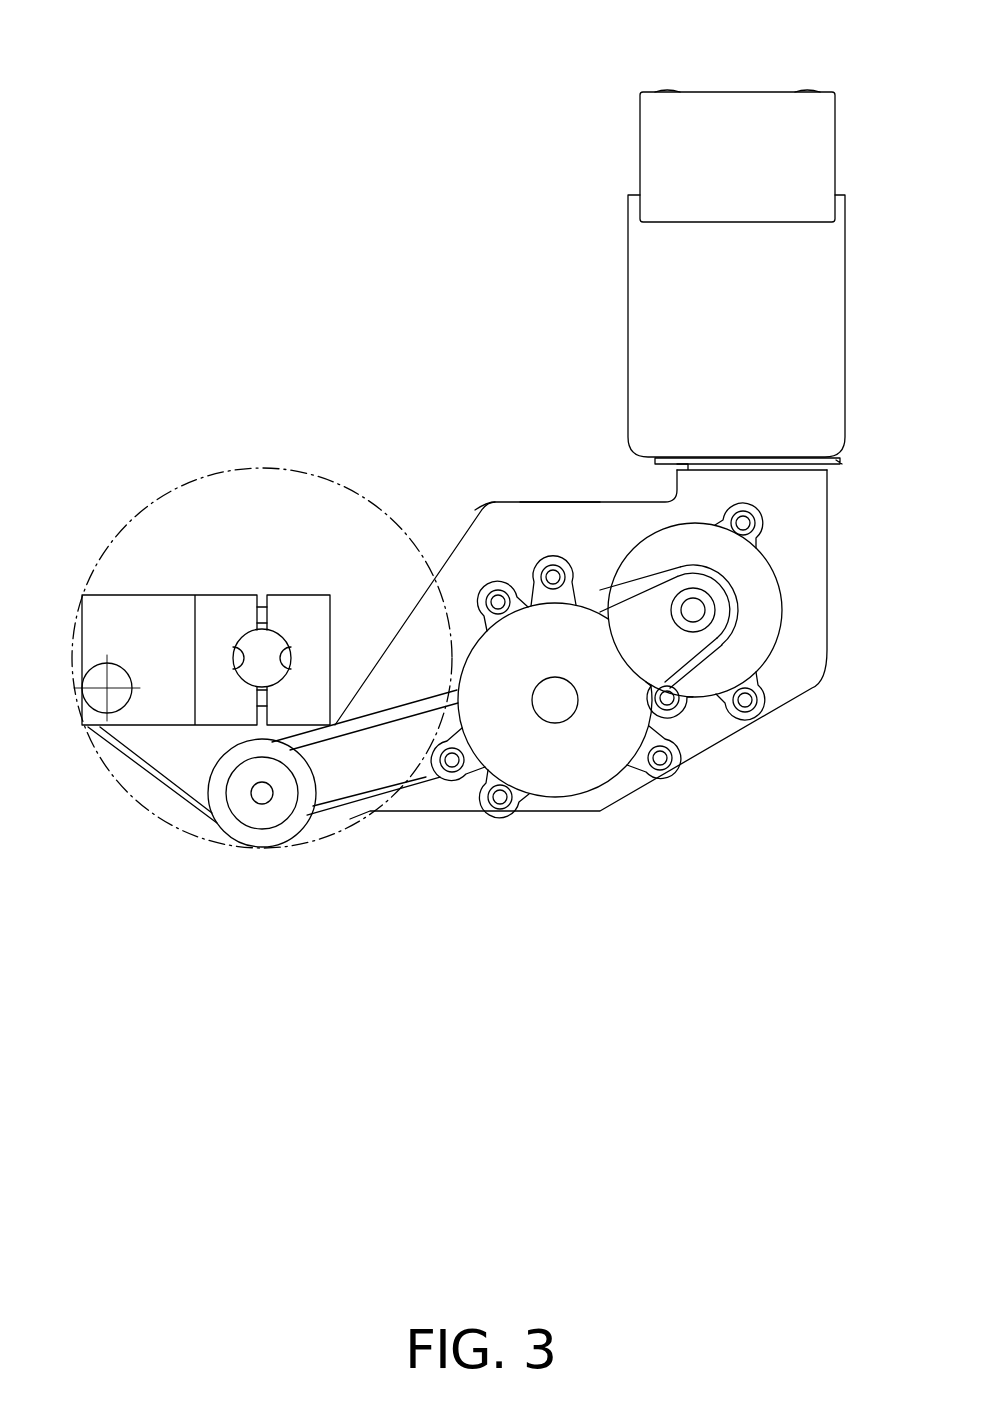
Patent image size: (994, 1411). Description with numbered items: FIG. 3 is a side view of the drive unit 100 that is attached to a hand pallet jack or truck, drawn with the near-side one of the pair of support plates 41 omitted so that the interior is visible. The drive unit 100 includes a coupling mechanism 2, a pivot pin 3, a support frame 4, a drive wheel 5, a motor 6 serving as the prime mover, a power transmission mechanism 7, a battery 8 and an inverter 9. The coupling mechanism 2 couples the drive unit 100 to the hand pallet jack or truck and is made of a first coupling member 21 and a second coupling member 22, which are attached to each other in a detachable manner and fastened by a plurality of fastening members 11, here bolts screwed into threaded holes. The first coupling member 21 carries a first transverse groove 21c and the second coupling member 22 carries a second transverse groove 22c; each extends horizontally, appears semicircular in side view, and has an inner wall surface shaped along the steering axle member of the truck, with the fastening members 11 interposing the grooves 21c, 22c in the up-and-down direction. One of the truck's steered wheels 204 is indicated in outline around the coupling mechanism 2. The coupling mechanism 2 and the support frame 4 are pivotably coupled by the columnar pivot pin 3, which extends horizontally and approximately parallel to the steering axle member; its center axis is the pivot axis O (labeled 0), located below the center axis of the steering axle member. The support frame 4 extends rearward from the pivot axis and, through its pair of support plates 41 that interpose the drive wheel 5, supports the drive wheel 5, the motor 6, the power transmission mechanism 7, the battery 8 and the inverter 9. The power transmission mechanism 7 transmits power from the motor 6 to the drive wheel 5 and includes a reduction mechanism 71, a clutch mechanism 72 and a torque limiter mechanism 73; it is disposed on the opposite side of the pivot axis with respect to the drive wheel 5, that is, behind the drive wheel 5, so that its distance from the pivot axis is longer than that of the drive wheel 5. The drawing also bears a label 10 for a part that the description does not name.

The drive unit 100 is at (418, 327).
The battery 8 is at (763, 90).
The inverter 9 is at (628, 288).
The support frame 4 is at (549, 603).
The housing corner portion 10 is at (478, 508).
The support plates 41 is at (556, 508).
The steered wheels 204 is at (298, 472).
The coupling mechanism 2 is at (225, 574).
The second coupling member 22 is at (154, 596).
The second transverse groove 22c is at (237, 660).
The first coupling member 21 is at (337, 611).
The first transverse groove 21c is at (291, 660).
The fastening members 11 is at (262, 629).
The pivot axis 0 is at (104, 688).
The pivot pin 3 is at (86, 728).
The drive wheel 5 is at (262, 848).
The power transmission mechanism 7 is at (584, 743).
The clutch mechanism 72 is at (566, 798).
The torque limiter mechanism 73 is at (615, 776).
The motor 6 is at (756, 662).
The reduction mechanism 71 is at (702, 676).